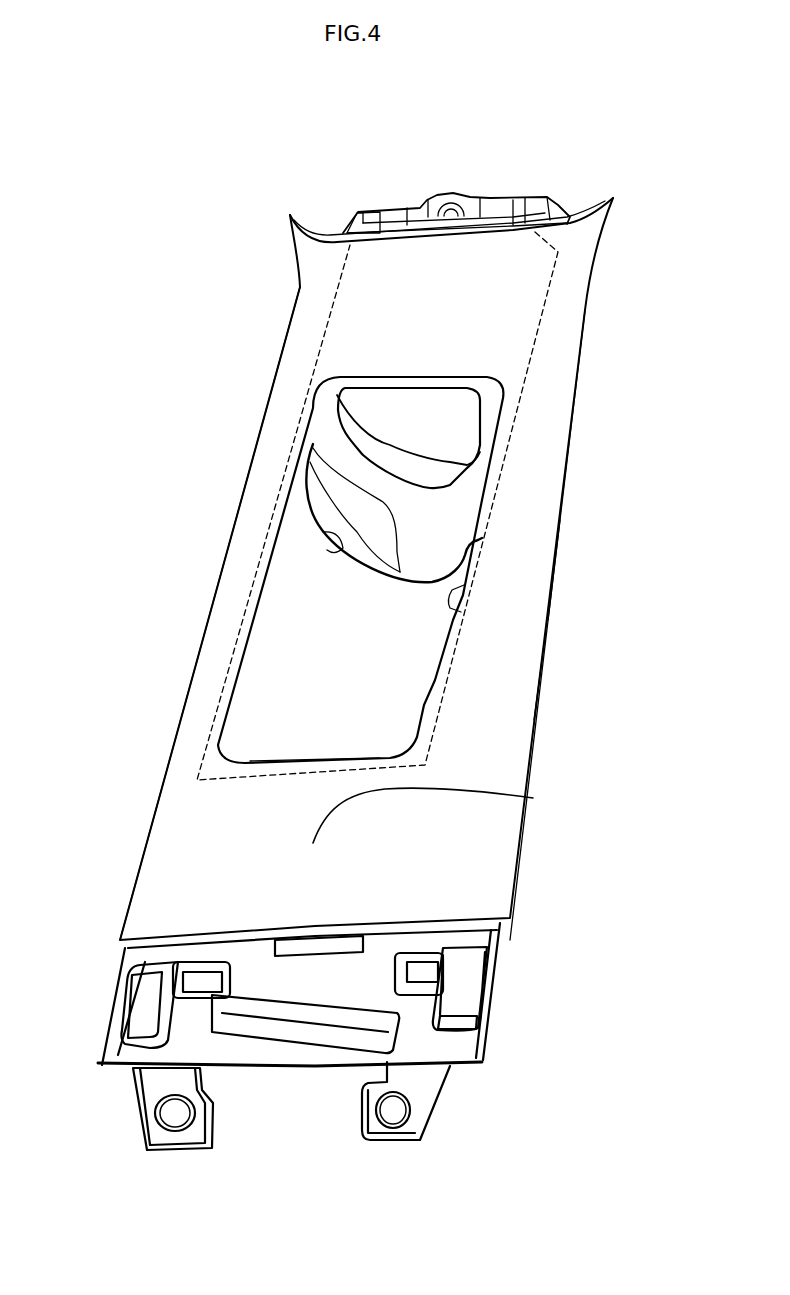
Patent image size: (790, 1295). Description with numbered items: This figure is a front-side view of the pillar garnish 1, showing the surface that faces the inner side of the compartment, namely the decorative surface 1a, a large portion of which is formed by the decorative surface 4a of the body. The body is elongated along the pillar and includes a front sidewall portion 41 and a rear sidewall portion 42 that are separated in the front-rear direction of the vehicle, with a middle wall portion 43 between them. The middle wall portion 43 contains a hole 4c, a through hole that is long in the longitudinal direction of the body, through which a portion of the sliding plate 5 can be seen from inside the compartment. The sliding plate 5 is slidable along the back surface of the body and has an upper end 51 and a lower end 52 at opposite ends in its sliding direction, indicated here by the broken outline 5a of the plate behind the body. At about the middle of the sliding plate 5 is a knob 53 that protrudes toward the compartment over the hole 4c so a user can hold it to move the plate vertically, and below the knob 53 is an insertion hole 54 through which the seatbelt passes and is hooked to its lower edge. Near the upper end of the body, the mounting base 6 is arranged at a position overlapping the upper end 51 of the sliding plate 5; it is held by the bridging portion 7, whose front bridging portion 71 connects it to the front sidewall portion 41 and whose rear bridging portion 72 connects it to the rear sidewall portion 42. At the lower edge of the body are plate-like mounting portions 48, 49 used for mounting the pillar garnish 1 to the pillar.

The pillar garnish 1 is at (578, 873).
The decorative surface 1a is at (548, 590).
The decorative surface 4a is at (533, 655).
The hole 4c is at (470, 580).
The sliding plate 5 is at (253, 672).
The frame edge 5a is at (243, 725).
The mounting base 6 is at (460, 193).
The bridging portion 7 is at (513, 207).
The front sidewall portion 41 is at (258, 475).
The rear sidewall portion 42 is at (570, 413).
The middle wall portion 43 is at (533, 798).
The mounting portion 48 is at (150, 1117).
The mounting portion 49 is at (413, 1093).
The upper end 51 is at (400, 224).
The lower end 52 is at (267, 780).
The knob 53 is at (400, 413).
The insertion hole 54 is at (330, 532).
The front bridging portion 71 is at (383, 208).
The rear bridging portion 72 is at (505, 198).